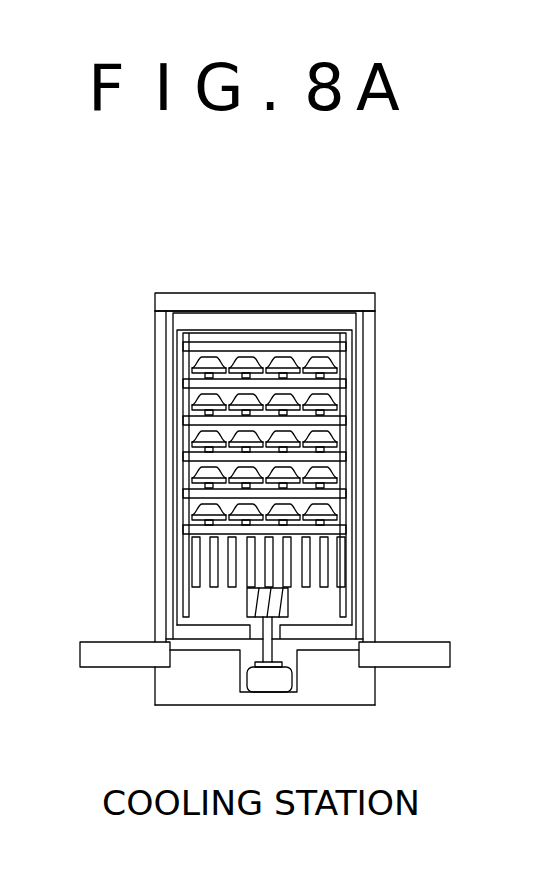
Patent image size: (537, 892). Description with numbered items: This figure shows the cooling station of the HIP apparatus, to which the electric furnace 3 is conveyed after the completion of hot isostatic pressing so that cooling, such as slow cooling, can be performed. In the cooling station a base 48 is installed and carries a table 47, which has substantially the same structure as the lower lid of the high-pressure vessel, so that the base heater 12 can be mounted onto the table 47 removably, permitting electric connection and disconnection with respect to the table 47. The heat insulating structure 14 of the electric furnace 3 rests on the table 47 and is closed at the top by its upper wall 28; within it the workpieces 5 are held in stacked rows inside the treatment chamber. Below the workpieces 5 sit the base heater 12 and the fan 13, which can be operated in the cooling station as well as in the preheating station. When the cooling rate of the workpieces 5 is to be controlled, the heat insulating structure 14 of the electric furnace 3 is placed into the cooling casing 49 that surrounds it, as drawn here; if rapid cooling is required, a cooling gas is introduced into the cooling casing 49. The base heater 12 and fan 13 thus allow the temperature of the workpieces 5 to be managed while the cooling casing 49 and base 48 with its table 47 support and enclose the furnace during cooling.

The electric furnace 3 is at (333, 315).
The cooling casing 49 is at (275, 293).
The upper wall 28 is at (216, 325).
The heat insulating structure 14 is at (362, 372).
The workpieces 5 is at (340, 430).
The base heater 12 is at (340, 552).
The fan 13 is at (292, 602).
The base 48 is at (123, 640).
The table 47 is at (345, 690).